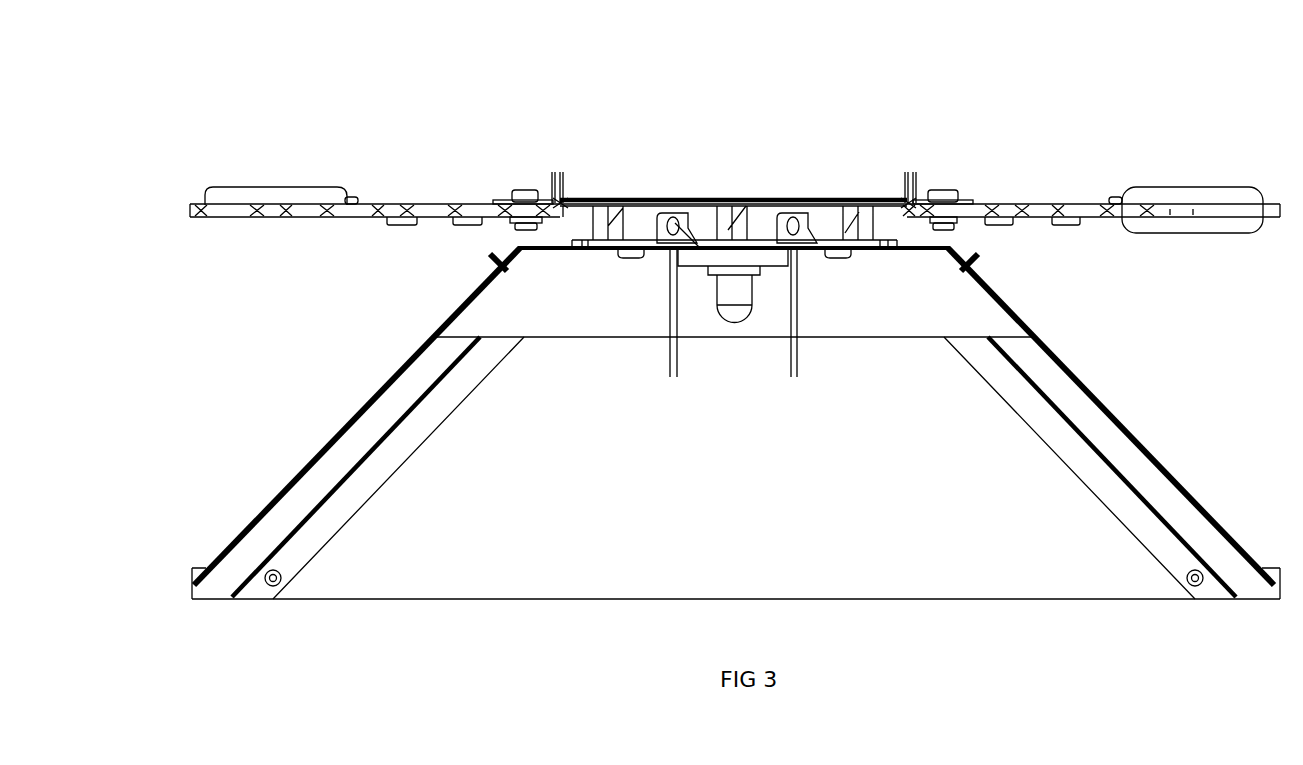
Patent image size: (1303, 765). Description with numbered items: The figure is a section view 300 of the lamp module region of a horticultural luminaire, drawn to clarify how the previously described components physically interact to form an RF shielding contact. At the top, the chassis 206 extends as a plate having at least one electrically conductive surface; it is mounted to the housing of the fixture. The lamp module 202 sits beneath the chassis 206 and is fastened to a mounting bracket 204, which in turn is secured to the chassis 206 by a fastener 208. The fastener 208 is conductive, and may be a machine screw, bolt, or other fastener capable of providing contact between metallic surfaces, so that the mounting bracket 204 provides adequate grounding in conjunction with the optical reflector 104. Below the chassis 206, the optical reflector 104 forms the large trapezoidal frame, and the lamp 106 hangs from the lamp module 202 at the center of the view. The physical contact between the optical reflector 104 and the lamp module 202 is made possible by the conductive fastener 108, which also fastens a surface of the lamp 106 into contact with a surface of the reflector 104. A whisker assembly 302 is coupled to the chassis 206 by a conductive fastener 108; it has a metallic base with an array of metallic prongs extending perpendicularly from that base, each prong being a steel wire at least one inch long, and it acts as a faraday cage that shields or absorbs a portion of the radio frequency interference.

The section view 300 is at (734, 138).
The lamp module 202 is at (852, 218).
The mounting bracket 204 is at (557, 203).
The chassis 206 is at (1037, 205).
The fastener 208 is at (936, 196).
The whisker assembly 302 is at (795, 237).
The conductive fastener 108 is at (620, 253).
The lamp 106 is at (733, 313).
The optical reflector 104 is at (736, 423).